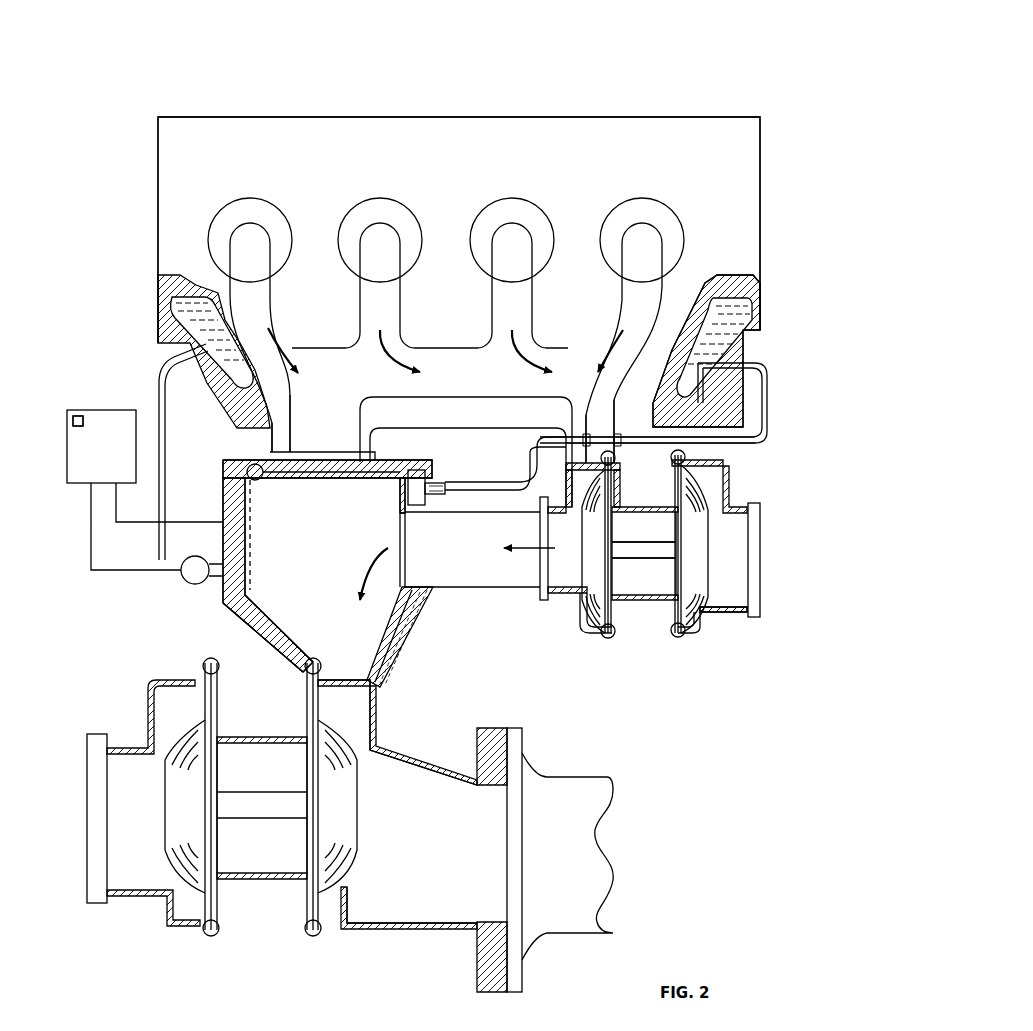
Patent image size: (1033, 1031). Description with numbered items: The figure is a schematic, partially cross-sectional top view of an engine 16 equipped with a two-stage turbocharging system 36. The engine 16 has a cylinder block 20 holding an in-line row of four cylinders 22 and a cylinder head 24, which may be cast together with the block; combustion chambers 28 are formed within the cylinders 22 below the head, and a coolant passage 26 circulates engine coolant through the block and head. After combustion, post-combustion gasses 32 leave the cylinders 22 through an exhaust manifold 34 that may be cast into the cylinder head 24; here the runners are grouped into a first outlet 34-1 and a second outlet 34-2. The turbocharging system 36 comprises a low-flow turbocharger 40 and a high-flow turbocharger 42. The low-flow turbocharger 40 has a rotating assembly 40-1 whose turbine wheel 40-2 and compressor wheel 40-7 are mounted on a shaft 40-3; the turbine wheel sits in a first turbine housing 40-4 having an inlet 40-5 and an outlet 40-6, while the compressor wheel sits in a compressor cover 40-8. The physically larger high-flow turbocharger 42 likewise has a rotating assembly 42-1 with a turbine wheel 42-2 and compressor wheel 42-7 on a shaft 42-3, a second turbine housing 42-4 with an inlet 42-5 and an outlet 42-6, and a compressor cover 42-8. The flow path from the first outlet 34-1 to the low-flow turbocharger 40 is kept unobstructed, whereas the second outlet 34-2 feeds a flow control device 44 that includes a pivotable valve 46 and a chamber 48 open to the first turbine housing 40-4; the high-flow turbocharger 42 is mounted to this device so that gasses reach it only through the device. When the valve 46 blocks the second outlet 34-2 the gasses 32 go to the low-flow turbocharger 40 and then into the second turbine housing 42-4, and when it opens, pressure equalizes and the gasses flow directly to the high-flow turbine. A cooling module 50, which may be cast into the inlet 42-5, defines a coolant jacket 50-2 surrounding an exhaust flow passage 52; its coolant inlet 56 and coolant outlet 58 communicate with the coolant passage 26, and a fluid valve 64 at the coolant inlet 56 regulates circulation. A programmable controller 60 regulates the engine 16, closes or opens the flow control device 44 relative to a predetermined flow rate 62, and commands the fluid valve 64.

The engine 16 is at (702, 88).
The cylinder block 20 is at (760, 300).
The cylinders 22 is at (272, 210).
The cylinder head 24 is at (752, 178).
The coolant passage 26 is at (172, 300).
The combustion chambers 28 is at (225, 215).
The post-combustion gasses 32 is at (395, 350).
The exhaust manifold 34 is at (442, 412).
The first outlet 34-1 is at (607, 385).
The second outlet 34-2 is at (265, 440).
The turbocharging system 36 is at (678, 768).
The low-flow turbocharger 40 is at (745, 465).
The rotating assembly 40-1 is at (655, 580).
The turbine wheel 40-2 is at (595, 630).
The shaft 40-3 is at (700, 530).
The first turbine housing 40-4 is at (620, 465).
The inlet 40-5 is at (580, 490).
The outlet 40-6 is at (560, 590).
The compressor wheel 40-7 is at (720, 545).
The compressor cover 40-8 is at (700, 630).
The high-flow turbocharger 42 is at (530, 738).
The rotating assembly 42-1 is at (258, 820).
The turbine wheel 42-2 is at (360, 825).
The shaft 42-3 is at (245, 800).
The second turbine housing 42-4 is at (415, 930).
The inlet 42-5 is at (360, 697).
The outlet 42-6 is at (537, 855).
The compressor wheel 42-7 is at (172, 860).
The compressor cover 42-8 is at (150, 720).
The flow control device 44 is at (248, 630).
The valve 46 is at (368, 488).
The chamber 48 is at (385, 660).
The cooling module 50 is at (212, 622).
The coolant jacket 50-2 is at (235, 535).
The exhaust flow passage 52 is at (350, 650).
The coolant inlet 56 is at (212, 582).
The coolant outlet 58 is at (448, 490).
The controller 60 is at (145, 490).
The predetermined flow rate 62 is at (78, 415).
The fluid valve 64 is at (182, 580).